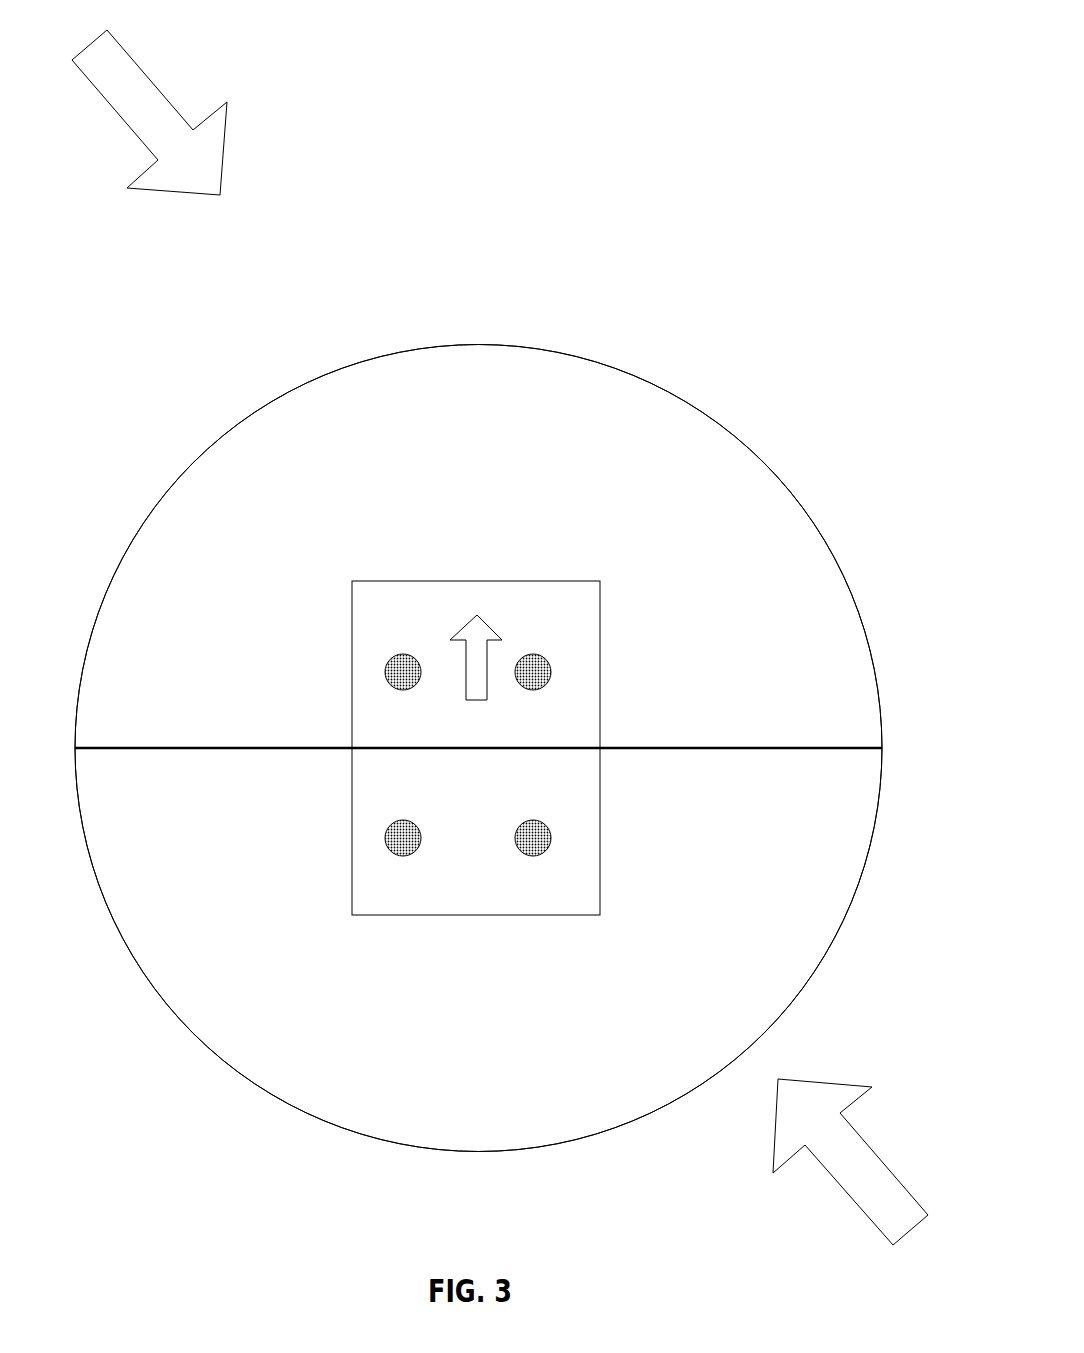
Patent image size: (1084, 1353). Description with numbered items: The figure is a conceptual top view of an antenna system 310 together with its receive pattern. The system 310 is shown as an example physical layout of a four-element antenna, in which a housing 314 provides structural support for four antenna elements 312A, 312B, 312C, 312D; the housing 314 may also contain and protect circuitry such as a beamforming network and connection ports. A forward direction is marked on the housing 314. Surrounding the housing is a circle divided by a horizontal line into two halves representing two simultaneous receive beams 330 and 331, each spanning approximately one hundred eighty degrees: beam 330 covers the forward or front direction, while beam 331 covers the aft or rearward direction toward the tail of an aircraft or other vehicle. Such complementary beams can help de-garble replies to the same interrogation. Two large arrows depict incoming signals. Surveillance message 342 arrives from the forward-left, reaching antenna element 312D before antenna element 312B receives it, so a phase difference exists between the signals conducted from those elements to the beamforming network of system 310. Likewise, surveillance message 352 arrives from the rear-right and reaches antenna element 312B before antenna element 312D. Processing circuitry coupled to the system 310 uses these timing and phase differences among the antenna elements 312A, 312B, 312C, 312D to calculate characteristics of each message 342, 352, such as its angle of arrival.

The antenna system 310 is at (822, 300).
The antenna element 312A is at (535, 690).
The antenna element 312B is at (535, 857).
The antenna element 312C is at (402, 857).
The antenna element 312D is at (402, 690).
The housing 314 is at (583, 580).
The receive beam 330 is at (252, 408).
The receive beam 331 is at (223, 1062).
The surveillance message 342 is at (268, 82).
The surveillance message 352 is at (717, 1294).